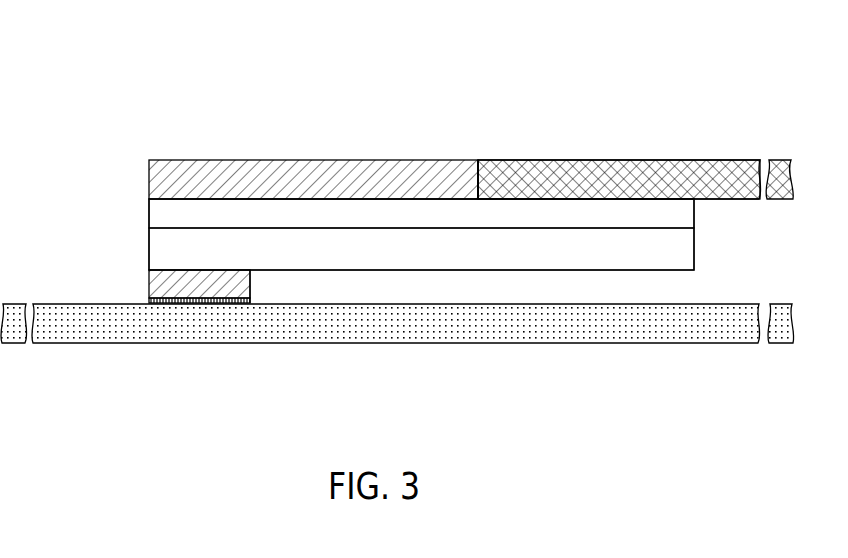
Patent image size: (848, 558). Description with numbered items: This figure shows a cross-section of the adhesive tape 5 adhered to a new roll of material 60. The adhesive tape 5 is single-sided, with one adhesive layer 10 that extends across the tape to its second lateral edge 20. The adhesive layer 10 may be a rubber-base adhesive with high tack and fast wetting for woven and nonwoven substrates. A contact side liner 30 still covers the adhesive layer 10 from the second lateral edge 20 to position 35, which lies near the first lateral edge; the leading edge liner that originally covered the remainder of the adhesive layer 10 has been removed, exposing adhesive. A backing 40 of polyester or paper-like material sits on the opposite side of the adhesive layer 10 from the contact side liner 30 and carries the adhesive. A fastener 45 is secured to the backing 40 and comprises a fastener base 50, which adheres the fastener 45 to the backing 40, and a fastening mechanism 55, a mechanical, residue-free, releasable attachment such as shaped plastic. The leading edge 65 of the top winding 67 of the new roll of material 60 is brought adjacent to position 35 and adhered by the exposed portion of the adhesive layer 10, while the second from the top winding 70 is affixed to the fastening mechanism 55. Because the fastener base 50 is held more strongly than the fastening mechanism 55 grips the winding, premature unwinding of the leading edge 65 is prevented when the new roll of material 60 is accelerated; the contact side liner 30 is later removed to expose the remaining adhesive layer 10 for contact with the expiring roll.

The adhesive tape 5 is at (122, 78).
The adhesive layer 10 is at (685, 213).
The second lateral edge 20 is at (149, 214).
The contact side liner 30 is at (252, 170).
The position 35 is at (477, 183).
The backing 40 is at (685, 248).
The fastener 45 is at (263, 295).
The fastener base 50 is at (149, 282).
The fastening mechanism 55 is at (210, 304).
The new roll of material 60 is at (708, 182).
The leading edge 65 is at (483, 178).
The top winding 67 is at (562, 170).
The second from the top winding 70 is at (383, 323).